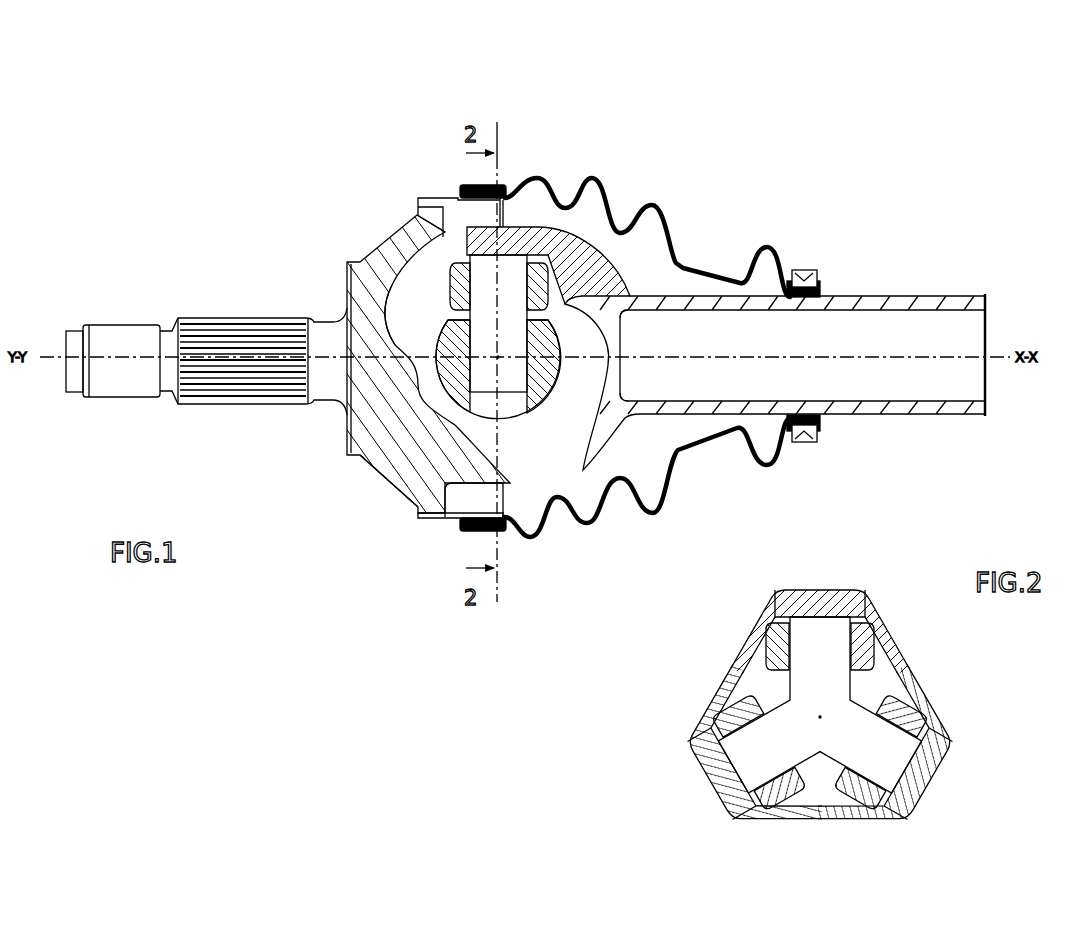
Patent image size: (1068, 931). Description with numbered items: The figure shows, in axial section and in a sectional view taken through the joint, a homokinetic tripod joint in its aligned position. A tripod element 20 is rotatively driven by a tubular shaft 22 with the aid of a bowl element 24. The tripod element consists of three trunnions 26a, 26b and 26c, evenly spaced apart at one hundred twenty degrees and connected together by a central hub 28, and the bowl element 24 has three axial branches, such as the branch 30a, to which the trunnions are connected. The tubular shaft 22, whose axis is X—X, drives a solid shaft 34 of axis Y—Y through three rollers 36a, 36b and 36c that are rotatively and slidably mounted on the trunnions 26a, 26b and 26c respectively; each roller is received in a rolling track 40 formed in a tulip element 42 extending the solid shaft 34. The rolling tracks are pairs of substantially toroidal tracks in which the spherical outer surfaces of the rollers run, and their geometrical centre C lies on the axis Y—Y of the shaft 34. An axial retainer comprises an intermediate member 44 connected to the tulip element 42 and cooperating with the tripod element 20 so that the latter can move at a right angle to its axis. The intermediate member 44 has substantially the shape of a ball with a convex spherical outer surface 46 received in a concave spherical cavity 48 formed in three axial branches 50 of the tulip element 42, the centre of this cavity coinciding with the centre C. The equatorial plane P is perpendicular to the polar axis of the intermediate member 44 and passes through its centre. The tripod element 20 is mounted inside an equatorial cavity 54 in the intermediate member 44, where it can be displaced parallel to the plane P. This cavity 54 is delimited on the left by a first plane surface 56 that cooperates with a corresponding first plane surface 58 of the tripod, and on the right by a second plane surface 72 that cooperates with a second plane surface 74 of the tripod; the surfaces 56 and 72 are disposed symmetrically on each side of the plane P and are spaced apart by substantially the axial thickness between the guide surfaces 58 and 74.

In FIG. 1, the tripod element 20 is at (499, 353).
In FIG. 1, the tubular shaft 22 is at (770, 351).
In FIG. 1, the bowl element 24 is at (531, 334).
In FIG. 2, the bowl element 24 is at (826, 708).
In FIG. 1, the trunnion 26a is at (488, 270).
In FIG. 2, the trunnion 26a is at (833, 627).
In FIG. 2, the trunnion 26b is at (900, 733).
In FIG. 2, the trunnion 26c is at (757, 777).
In FIG. 2, the central hub 28 is at (797, 700).
In FIG. 1, the axial branch 30a is at (518, 233).
In FIG. 2, the axial branch 30a is at (835, 597).
In FIG. 1, the solid shaft 34 is at (222, 323).
In FIG. 1, the roller 36a is at (423, 243).
In FIG. 2, the roller 36a is at (860, 647).
In FIG. 2, the roller 36b is at (867, 793).
In FIG. 2, the roller 36c is at (727, 710).
In FIG. 1, the rolling track 40 is at (553, 307).
In FIG. 1, the tulip element 42 is at (352, 418).
In FIG. 1, the intermediate member 44 is at (533, 412).
In FIG. 1, the convex spherical outer surface 46 is at (570, 376).
In FIG. 1, the concave spherical cavity 48 is at (483, 415).
In FIG. 1, the axial branch of the tulip element 50 is at (512, 450).
In FIG. 1, the equatorial cavity 54 is at (487, 483).
In FIG. 1, the first plane surface 56 is at (436, 344).
In FIG. 1, the first plane surface of the tripod 58 is at (393, 457).
In FIG. 1, the second plane surface 72 is at (600, 357).
In FIG. 1, the second plane surface of the tripod 74 is at (556, 348).
In FIG. 1, the geometrical centre C is at (498, 352).
In FIG. 2, the geometrical centre C is at (820, 713).
In FIG. 1, the equatorial plane P is at (501, 180).